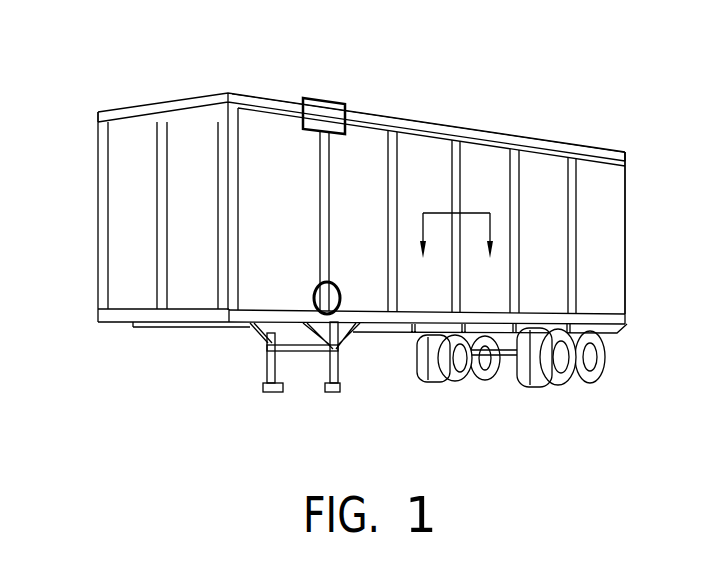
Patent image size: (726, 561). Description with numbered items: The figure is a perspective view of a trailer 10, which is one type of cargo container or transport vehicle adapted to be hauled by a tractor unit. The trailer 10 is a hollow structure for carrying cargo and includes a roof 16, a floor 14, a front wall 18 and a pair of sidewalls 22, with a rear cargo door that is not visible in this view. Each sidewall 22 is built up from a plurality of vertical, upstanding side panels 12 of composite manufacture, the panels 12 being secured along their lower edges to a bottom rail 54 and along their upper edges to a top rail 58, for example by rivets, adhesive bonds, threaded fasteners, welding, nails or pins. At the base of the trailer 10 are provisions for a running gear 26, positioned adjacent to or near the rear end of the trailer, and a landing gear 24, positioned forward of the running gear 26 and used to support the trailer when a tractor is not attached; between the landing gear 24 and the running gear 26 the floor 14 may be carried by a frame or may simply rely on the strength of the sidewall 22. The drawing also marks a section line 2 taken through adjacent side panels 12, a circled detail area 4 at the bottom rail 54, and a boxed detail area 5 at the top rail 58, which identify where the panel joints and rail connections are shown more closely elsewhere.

The trailer 10 is at (510, 121).
The composite side panels 12 is at (612, 243).
The floor 14 is at (130, 324).
The roof 16 is at (164, 102).
The front wall 18 is at (123, 162).
The sidewall 22 is at (605, 190).
The landing gear 24 is at (337, 398).
The running gear 26 is at (496, 426).
The section line 2- 2 is at (457, 258).
The detail area 4 is at (312, 292).
The detail area 5 is at (328, 98).
The bottom rail 54 is at (258, 315).
The top rail 58 is at (424, 132).